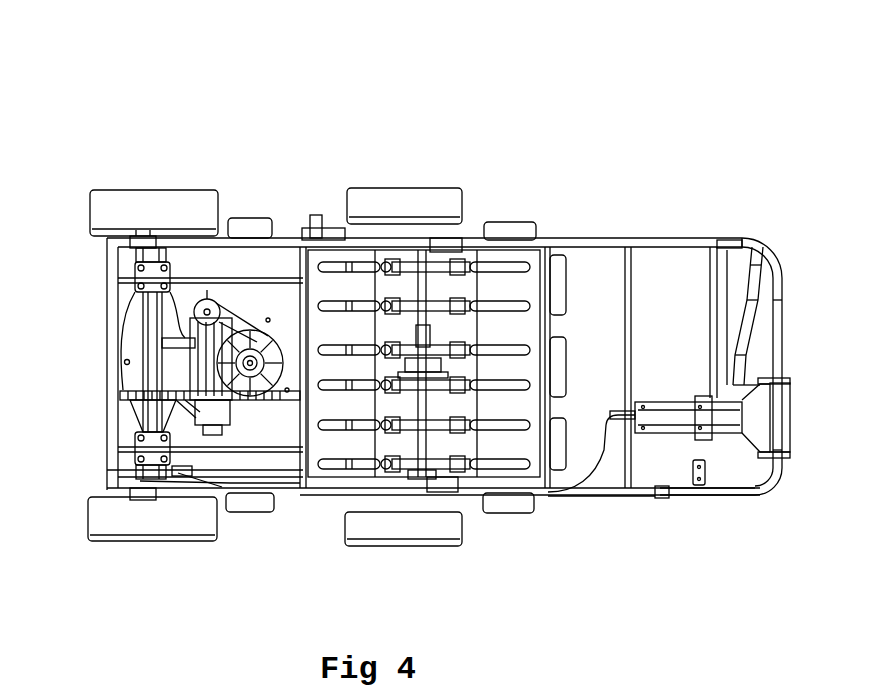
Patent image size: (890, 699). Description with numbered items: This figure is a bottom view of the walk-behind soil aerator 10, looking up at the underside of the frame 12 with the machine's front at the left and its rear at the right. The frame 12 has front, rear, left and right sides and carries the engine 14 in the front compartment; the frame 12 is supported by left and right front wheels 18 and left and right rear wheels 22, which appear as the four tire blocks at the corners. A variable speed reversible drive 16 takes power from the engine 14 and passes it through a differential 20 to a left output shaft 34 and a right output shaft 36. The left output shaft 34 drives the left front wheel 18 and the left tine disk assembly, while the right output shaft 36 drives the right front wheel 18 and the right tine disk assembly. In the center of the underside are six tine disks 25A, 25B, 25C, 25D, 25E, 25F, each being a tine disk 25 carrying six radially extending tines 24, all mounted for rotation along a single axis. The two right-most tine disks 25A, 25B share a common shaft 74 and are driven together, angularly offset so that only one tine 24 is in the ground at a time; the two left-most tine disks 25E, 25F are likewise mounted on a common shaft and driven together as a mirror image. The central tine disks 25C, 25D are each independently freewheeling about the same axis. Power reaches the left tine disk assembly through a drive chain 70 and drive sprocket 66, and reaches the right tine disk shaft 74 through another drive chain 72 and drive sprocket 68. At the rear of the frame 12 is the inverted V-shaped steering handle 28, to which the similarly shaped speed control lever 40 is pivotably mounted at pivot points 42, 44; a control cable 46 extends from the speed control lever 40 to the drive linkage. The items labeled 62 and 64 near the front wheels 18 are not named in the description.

The walk-behind soil aerator 10 is at (388, 112).
The frame 12 is at (288, 267).
The engine 14 is at (253, 330).
The variable speed reversible drive 16 is at (173, 342).
The front wheels 18 is at (108, 200).
The differential 20 is at (145, 416).
The rear wheels 22 is at (458, 190).
The tines 24 is at (541, 269).
The tine disk 25 is at (782, 416).
The tine disk 25A is at (423, 465).
The tine disk 25B is at (425, 425).
The tine disk 25C is at (448, 383).
The tine disk 25D is at (404, 354).
The tine disk 25E is at (407, 310).
The tine disk 25F is at (402, 273).
The steering handle 28 is at (748, 310).
The left output shaft 34 is at (136, 253).
The right output shaft 36 is at (138, 476).
The speed control lever 40 is at (784, 364).
The pivot point 42 is at (728, 232).
The pivot point 44 is at (726, 503).
The control cable 46 is at (193, 481).
The wheel motor 62 is at (130, 234).
The wheel motor 64 is at (127, 496).
The drive sprocket 66 is at (448, 240).
The drive sprocket 68 is at (443, 486).
The drive chain 70 is at (210, 316).
The drive chain 72 is at (182, 474).
The right tine disk shaft 74 is at (423, 474).